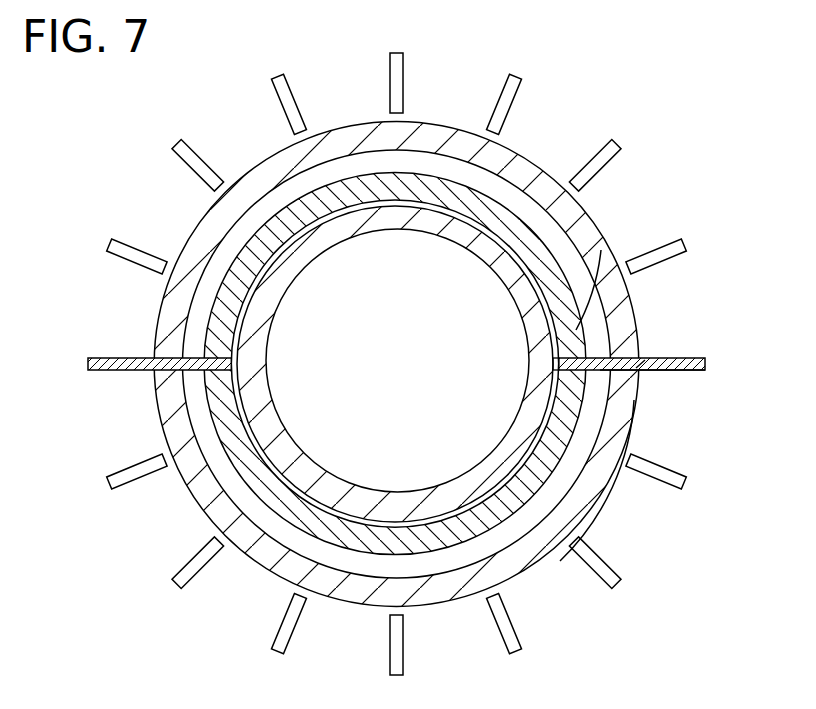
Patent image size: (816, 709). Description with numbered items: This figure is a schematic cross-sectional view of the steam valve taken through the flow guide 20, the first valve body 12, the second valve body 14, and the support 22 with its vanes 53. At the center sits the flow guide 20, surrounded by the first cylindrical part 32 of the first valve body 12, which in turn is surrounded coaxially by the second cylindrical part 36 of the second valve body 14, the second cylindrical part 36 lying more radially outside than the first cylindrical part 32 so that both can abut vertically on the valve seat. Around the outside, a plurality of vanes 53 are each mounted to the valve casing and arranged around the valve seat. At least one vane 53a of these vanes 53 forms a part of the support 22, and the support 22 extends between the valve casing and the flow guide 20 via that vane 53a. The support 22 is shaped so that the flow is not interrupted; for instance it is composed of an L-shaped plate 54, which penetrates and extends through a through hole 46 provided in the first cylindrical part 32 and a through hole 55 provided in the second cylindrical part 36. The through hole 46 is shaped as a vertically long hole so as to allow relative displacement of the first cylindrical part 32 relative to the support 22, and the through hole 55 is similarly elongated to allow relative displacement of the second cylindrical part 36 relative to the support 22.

The first valve body 12 is at (589, 327).
The second valve body 14 is at (601, 221).
The flow guide 20 is at (505, 298).
The support 22 is at (677, 358).
The first cylindrical part 32 is at (582, 400).
The second cylindrical part 36 is at (607, 487).
The through hole 46 is at (557, 363).
The vanes 53 is at (683, 244).
The vane 53a is at (683, 370).
The L-shaped plate 54 is at (122, 357).
The through hole 55 is at (643, 364).